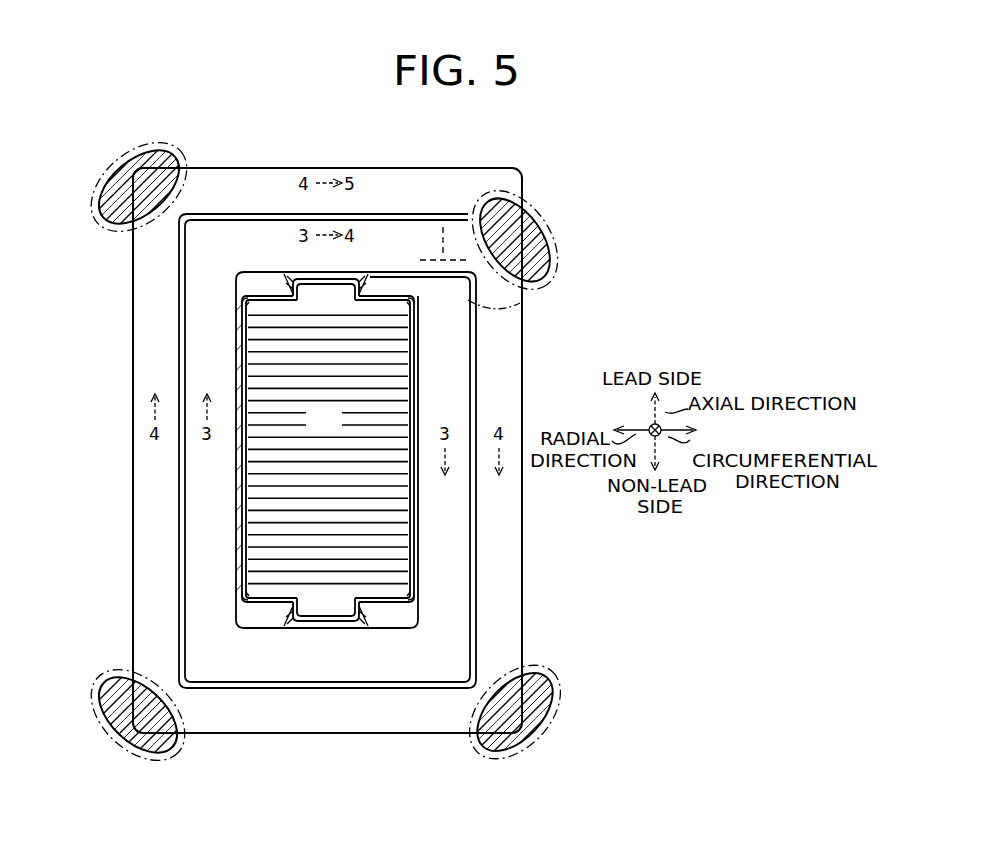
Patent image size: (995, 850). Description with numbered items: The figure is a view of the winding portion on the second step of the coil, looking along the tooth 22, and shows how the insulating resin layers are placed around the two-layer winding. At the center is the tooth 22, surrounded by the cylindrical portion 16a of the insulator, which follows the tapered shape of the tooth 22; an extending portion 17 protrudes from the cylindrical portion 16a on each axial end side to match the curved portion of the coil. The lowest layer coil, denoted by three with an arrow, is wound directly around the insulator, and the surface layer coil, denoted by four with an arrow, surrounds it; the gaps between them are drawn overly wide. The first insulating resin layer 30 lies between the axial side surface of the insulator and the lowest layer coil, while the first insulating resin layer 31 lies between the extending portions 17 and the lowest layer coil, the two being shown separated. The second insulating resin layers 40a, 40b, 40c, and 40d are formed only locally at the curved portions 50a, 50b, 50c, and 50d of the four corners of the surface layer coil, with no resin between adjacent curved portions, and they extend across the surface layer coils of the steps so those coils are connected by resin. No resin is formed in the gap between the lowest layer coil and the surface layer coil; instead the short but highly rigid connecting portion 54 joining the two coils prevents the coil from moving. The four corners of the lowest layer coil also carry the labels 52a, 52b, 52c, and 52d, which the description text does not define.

The cylindrical portion 16a is at (262, 330).
The extending portion 17 is at (300, 277).
The tooth 22 is at (345, 433).
The first insulating resin layer 30 is at (240, 512).
The first insulating resin layer 31 is at (388, 272).
The second insulating resin layer 40a is at (102, 215).
The second insulating resin layer 40b is at (550, 255).
The second insulating resin layer 40c is at (500, 755).
The second insulating resin layer 40d is at (150, 757).
The curved portion 50a is at (103, 177).
The curved portion 50b is at (550, 222).
The curved portion 50c is at (548, 740).
The curved portion 50d is at (108, 735).
The corner portion 52a is at (243, 298).
The corner portion 52b is at (412, 298).
The corner portion 52c is at (412, 598).
The corner portion 52d is at (243, 598).
The connecting portion 54 is at (466, 214).